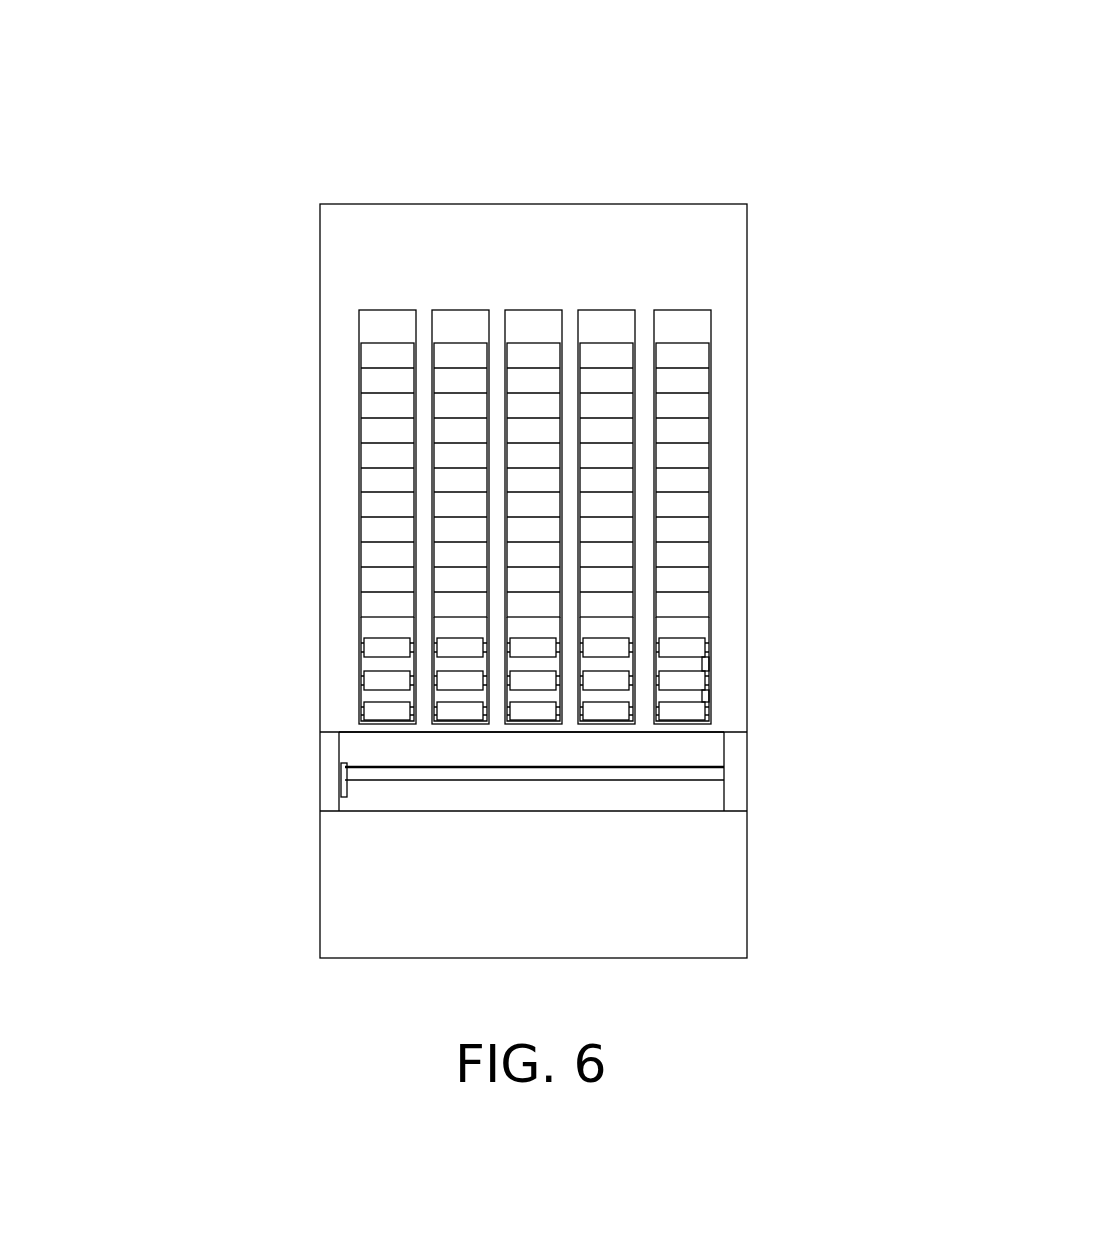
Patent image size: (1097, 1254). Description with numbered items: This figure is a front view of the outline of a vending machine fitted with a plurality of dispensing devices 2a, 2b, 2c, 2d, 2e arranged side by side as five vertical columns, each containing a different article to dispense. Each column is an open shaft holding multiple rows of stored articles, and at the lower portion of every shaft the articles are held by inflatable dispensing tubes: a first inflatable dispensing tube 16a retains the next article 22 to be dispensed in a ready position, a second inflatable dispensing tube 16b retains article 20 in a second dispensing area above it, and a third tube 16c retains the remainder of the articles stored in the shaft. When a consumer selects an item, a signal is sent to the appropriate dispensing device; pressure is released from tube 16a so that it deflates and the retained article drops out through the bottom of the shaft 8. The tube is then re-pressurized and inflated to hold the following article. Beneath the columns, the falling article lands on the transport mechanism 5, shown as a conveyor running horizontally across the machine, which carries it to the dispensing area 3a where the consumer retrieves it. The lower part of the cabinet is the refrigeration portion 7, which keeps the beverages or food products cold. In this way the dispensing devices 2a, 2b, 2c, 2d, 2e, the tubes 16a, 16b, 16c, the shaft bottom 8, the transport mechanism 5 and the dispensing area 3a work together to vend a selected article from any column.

The dispensing device 2a is at (329, 424).
The dispensing device 2b is at (392, 398).
The dispensing device 2c is at (460, 372).
The dispensing device 2d is at (664, 408).
The dispensing device 2e is at (778, 443).
The first inflatable dispensing tube 16a is at (697, 715).
The second inflatable dispensing tube 16b is at (778, 675).
The third tube 16c is at (779, 640).
The article 20 is at (702, 663).
The article 22 is at (703, 695).
The dispensing area 3a is at (683, 753).
The transport mechanism 5 is at (412, 850).
The refrigeration portion 7 is at (609, 581).
The bottom of the shaft 8 is at (458, 757).